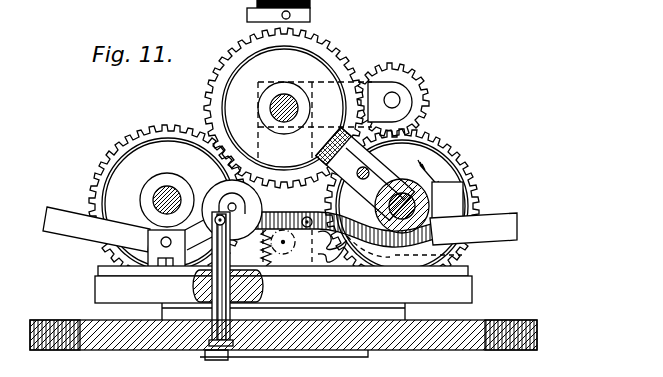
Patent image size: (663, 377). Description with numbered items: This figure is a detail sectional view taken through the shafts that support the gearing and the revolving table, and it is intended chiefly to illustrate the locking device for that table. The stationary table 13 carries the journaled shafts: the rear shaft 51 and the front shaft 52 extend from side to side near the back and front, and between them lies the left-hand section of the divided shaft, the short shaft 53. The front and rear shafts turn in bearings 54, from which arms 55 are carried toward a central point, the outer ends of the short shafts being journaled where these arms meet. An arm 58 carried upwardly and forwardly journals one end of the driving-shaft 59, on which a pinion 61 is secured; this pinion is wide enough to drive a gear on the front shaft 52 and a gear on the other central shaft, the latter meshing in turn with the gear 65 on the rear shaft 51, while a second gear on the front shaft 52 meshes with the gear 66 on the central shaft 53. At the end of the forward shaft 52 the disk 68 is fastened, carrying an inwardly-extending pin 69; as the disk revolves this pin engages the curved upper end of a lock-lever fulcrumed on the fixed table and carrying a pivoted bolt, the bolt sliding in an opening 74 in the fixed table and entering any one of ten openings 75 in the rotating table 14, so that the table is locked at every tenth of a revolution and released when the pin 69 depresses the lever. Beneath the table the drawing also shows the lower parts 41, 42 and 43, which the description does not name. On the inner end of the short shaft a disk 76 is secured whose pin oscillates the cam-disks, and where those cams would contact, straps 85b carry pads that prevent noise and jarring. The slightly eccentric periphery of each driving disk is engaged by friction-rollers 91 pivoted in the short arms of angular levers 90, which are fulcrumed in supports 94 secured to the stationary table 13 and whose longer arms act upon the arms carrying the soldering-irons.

The stationary table 13 is at (470, 289).
The rotating table 14 is at (472, 344).
The pawl 41 is at (355, 236).
The pawl pivot 42 is at (310, 266).
The spring 43 is at (254, 248).
The rear shaft 51 is at (164, 190).
The front shaft 52 is at (479, 190).
The divided shaft section 53 is at (288, 96).
The bearings 54 is at (463, 256).
The arms 55 is at (415, 166).
The arm 58 is at (373, 82).
The driving-shaft 59 is at (392, 100).
The pinion 61 is at (412, 86).
The gear 65 is at (122, 150).
The gear 66 is at (349, 66).
The disk 68 is at (452, 154).
The pin 69 is at (389, 180).
The opening 74 is at (195, 290).
The opening 75 is at (214, 348).
The disk 76 is at (351, 46).
The straps 85b is at (247, 14).
The angular levers 90 is at (190, 238).
The friction-rollers 91 is at (314, 203).
The supports 94 is at (160, 252).